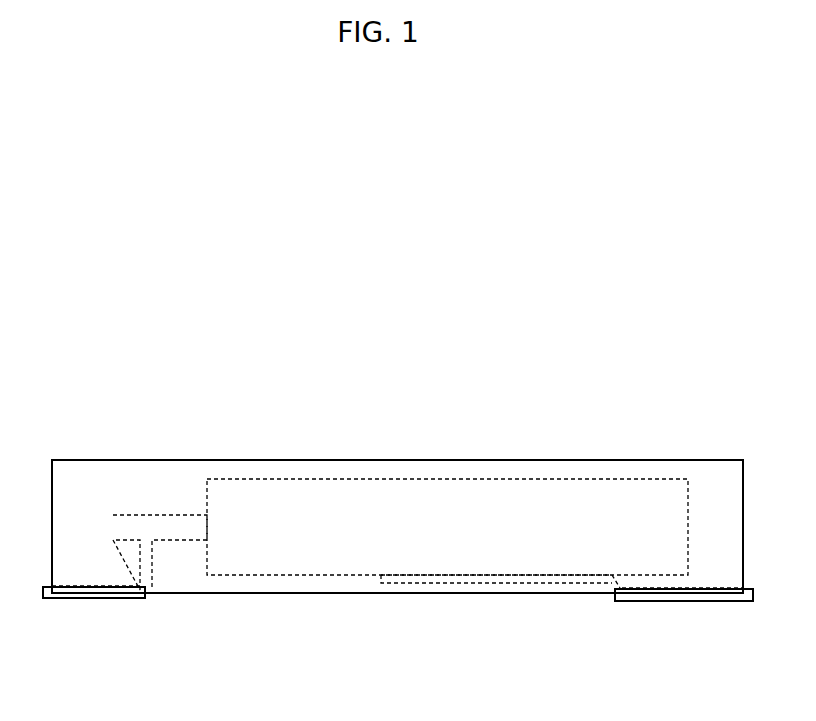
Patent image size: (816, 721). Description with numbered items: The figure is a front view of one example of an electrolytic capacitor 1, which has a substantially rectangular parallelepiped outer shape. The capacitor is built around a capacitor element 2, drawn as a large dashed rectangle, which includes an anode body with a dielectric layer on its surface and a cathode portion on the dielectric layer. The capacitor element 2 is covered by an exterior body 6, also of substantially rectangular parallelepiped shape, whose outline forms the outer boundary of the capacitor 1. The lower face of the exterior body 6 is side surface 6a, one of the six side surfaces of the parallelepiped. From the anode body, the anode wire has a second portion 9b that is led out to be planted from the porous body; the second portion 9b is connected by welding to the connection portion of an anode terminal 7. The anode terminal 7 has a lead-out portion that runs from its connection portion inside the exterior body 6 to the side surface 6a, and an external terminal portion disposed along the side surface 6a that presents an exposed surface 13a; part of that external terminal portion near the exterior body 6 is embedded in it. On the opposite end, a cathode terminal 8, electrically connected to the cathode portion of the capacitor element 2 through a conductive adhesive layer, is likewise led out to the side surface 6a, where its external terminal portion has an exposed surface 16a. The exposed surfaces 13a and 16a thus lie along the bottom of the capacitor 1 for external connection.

The electrolytic capacitor 1 is at (622, 409).
The exterior body 6 is at (84, 472).
The capacitor element 2 is at (297, 505).
The second portion 9b is at (172, 515).
The anode terminal 7 is at (79, 598).
The exposed surface 13a is at (100, 601).
The side surface 6a is at (396, 601).
The cathode terminal 8 is at (703, 602).
The exposed surface 16a is at (653, 604).